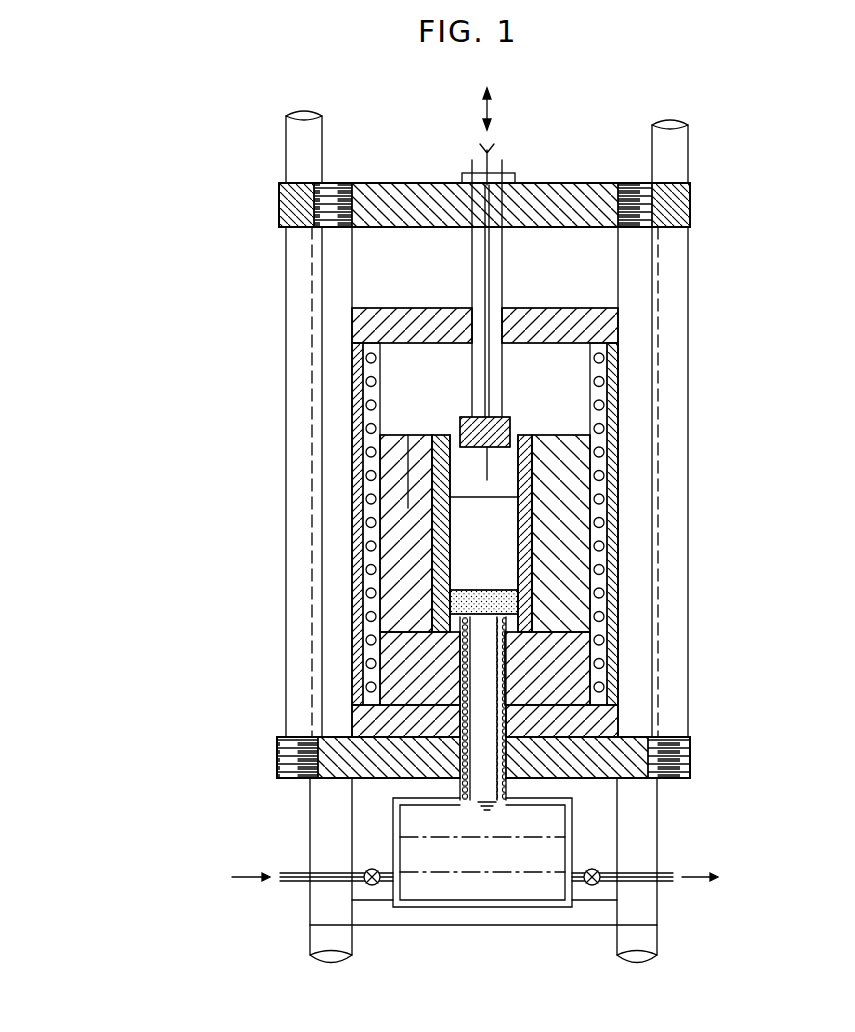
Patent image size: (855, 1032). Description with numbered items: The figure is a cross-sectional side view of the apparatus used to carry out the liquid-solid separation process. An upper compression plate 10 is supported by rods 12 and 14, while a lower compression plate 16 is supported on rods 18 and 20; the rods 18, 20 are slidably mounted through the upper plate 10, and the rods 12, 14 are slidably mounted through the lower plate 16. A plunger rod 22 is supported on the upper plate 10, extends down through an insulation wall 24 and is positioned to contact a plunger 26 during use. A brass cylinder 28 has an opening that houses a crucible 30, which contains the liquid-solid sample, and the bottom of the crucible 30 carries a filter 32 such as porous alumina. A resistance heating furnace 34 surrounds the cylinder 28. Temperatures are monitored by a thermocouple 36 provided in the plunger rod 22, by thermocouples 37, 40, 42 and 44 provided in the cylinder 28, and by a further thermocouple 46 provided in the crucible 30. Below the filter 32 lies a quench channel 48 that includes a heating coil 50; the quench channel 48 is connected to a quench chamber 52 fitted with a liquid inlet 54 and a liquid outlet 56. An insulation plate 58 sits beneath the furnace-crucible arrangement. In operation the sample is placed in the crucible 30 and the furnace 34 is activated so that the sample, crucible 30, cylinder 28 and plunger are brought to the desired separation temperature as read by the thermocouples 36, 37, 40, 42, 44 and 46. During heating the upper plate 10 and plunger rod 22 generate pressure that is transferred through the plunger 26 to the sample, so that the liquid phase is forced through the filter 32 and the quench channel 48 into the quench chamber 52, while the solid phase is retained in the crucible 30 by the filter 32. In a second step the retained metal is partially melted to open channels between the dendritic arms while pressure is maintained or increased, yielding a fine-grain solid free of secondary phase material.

The upper compression plate 10 is at (692, 206).
The rod 12 is at (622, 252).
The rod 14 is at (343, 246).
The lower compression plate 16 is at (690, 760).
The rod 18 is at (678, 338).
The rod 20 is at (298, 265).
The plunger rod 22 is at (500, 287).
The insulation wall 24 is at (423, 307).
The plunger 26 is at (470, 488).
The brass cylinder 28 is at (580, 568).
The crucible 30 is at (518, 549).
The filter 32 is at (485, 591).
The resistance heating furnace 34 is at (600, 438).
The thermocouple 36 is at (492, 151).
The thermocouple 37 is at (390, 432).
The thermocouple 40 is at (408, 432).
The thermocouple 42 is at (425, 432).
The thermocouple 44 is at (585, 432).
The thermocouple 46 is at (525, 432).
The quench channel 48 is at (473, 690).
The heating coil 50 is at (470, 727).
The quench chamber 52 is at (467, 864).
The liquid inlet 54 is at (295, 870).
The liquid outlet 56 is at (665, 870).
The insulation plate 58 is at (610, 727).